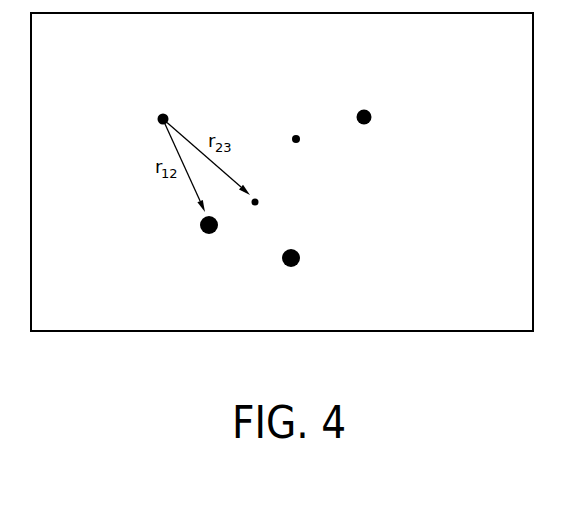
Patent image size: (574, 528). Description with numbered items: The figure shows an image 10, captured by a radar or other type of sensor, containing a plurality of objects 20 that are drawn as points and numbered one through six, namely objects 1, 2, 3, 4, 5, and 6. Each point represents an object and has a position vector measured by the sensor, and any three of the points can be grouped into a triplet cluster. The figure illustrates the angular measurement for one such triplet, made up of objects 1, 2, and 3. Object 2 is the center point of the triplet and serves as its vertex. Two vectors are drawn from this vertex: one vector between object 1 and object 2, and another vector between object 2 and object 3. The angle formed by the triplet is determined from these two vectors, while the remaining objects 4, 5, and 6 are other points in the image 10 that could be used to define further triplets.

The object 1 is at (198, 237).
The object 2 is at (147, 119).
The object 3 is at (265, 195).
The object 4 is at (300, 264).
The object 5 is at (303, 123).
The object 6 is at (375, 106).
The image 10 is at (499, 366).
The objects 20 is at (449, 261).